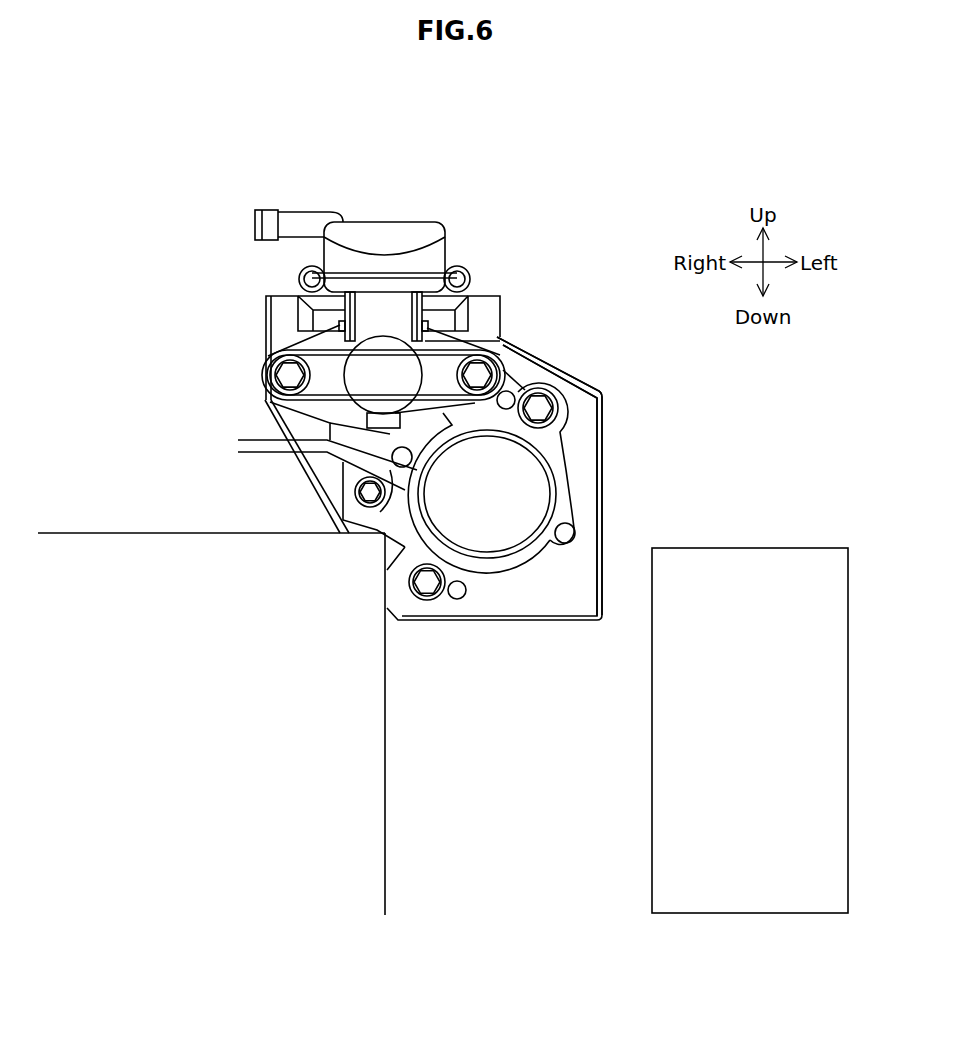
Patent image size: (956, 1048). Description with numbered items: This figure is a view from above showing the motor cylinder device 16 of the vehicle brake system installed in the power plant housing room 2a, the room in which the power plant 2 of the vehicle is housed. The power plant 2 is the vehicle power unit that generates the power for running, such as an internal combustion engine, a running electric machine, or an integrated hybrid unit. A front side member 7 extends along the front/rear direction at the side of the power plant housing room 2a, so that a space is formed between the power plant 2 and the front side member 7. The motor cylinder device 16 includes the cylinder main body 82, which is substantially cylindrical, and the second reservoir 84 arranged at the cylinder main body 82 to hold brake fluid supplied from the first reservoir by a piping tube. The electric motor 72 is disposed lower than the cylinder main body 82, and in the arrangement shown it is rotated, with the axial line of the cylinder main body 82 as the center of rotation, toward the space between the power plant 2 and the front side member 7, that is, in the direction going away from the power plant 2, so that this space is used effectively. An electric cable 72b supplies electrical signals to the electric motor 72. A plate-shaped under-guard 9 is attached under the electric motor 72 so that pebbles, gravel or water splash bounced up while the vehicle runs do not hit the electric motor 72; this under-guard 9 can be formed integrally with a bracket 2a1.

The power plant 2 is at (386, 767).
The power plant housing room 2a is at (104, 160).
The bracket 2a1 is at (604, 416).
The front side member 7 is at (745, 548).
The under-guard 9 is at (523, 620).
The motor cylinder device 16 is at (488, 150).
The electric motor 72 is at (517, 460).
The electric cable 72b is at (259, 452).
The cylinder main body 82 is at (353, 367).
The second reservoir 84 is at (398, 232).